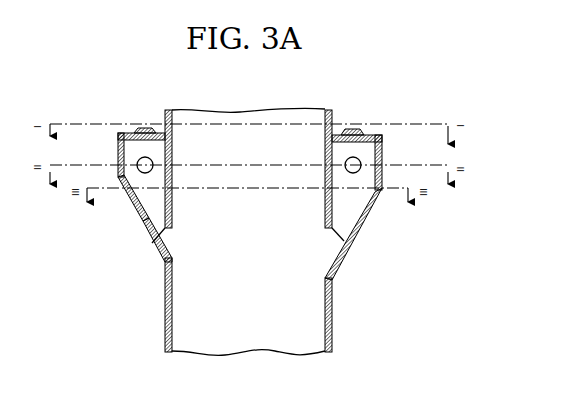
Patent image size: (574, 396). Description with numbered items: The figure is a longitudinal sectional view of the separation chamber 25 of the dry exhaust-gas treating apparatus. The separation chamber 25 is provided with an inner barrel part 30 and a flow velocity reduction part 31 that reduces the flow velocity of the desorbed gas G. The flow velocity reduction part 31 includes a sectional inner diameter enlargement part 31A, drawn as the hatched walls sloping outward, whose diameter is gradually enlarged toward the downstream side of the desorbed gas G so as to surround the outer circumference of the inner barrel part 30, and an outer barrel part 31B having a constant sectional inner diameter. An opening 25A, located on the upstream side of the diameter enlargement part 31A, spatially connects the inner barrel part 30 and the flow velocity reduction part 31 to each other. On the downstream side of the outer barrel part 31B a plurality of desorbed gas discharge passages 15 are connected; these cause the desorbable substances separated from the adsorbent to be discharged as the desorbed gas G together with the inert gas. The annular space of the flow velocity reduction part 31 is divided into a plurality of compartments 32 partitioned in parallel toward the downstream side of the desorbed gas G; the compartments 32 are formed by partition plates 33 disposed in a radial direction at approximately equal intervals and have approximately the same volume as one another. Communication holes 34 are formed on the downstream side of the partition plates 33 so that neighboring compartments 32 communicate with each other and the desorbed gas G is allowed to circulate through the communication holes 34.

The desorbed gas discharge passage 15 is at (144, 127).
The separation chamber 25 is at (336, 245).
The opening 25A is at (153, 260).
The inner barrel part 30 is at (312, 310).
The flow velocity reduction part 31 is at (396, 216).
The sectional inner diameter enlargement part 31A is at (357, 232).
The outer barrel part 31B is at (384, 178).
The compartment 32 is at (103, 194).
The partition plate 33 is at (147, 207).
The communication hole 34 is at (138, 159).
The desorbed gas G is at (351, 197).